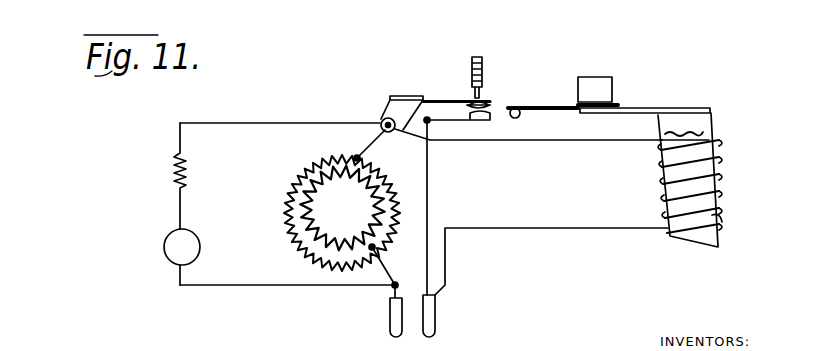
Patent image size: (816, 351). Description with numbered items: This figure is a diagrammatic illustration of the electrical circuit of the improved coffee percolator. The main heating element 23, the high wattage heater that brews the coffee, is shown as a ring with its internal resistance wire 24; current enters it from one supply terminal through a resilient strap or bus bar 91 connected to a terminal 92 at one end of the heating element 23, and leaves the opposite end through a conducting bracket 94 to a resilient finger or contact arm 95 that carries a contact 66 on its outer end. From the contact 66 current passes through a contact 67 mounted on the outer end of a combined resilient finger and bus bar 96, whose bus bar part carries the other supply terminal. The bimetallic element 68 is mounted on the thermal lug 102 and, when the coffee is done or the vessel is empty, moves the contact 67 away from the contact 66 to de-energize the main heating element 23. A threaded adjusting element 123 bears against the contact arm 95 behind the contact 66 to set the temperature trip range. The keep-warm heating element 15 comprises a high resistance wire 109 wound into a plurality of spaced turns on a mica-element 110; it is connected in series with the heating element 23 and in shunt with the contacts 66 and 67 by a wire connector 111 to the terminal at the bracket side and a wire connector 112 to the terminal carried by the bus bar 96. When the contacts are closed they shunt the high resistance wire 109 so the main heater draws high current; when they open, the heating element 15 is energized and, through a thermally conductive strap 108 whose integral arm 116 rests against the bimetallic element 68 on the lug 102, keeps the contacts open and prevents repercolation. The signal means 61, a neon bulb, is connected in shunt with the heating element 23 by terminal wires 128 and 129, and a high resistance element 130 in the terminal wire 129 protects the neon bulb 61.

The keep-warm heating element 15 is at (735, 172).
The heating element 23 is at (281, 200).
The resistance wire 24 is at (310, 158).
The signal means 61 is at (181, 247).
The contact 66 is at (491, 108).
The contact 67 is at (492, 117).
The bimetallic element 68 is at (532, 106).
The resilient bus bar 91 is at (386, 270).
The terminal 92 is at (406, 338).
The conducting bracket 94 is at (384, 111).
The contact arm 95 is at (438, 97).
The combined resilient finger and bus bar 96 is at (431, 121).
The thermal lug 102 is at (598, 78).
The thermally conductive strap 108 is at (703, 132).
The high resistance wire 109 is at (722, 222).
The mica-element 110 is at (682, 181).
The wire connector 111 is at (520, 142).
The wire connector 112 is at (536, 230).
The arm 116 is at (645, 108).
The adjusting element 123 is at (483, 66).
The terminal wire 128 is at (243, 287).
The terminal wire 129 is at (242, 122).
The high resistance element 130 is at (178, 178).